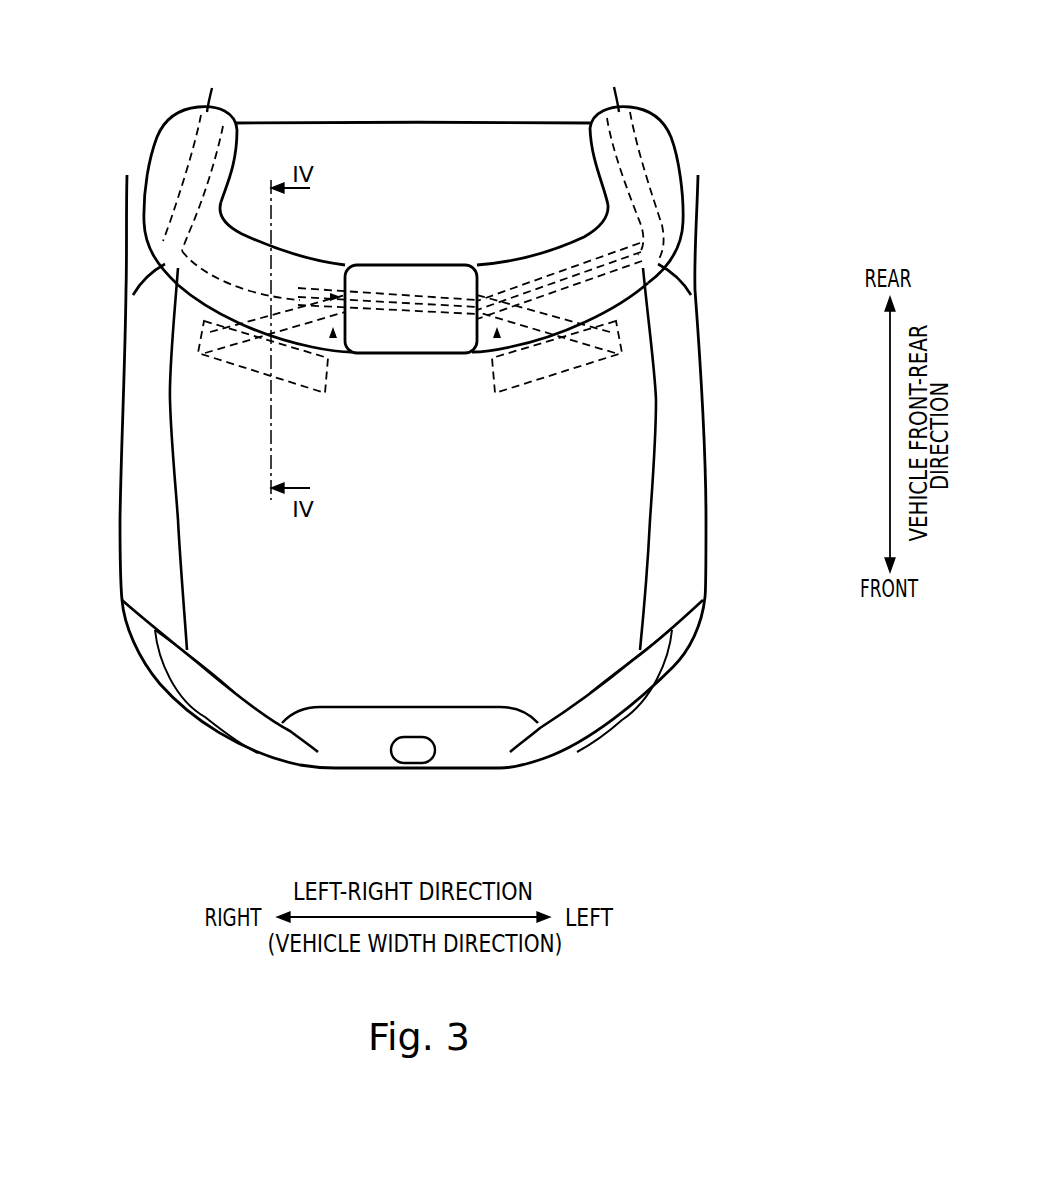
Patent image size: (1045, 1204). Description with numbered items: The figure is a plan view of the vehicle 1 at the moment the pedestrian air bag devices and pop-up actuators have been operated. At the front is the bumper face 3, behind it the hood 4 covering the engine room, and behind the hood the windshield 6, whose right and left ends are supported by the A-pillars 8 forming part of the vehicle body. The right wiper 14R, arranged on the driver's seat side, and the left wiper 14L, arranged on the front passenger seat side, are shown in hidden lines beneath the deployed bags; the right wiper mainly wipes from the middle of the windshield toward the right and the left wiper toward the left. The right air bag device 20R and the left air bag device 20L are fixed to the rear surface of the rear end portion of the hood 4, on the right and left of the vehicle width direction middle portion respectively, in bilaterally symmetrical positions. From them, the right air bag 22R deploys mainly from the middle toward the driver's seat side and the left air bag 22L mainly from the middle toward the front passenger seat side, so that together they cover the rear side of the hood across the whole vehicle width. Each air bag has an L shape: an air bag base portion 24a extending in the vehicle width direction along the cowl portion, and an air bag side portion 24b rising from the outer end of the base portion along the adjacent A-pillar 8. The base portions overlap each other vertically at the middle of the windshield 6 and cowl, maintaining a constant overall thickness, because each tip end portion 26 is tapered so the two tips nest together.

The vehicle 1 is at (657, 83).
The bumper face 3 is at (363, 747).
The hood 4 is at (628, 513).
The windshield 6 is at (452, 160).
The A-pillar 8 is at (165, 196).
The right wiper 14R is at (340, 358).
The left wiper 14L is at (510, 367).
The right air bag device 20R is at (197, 340).
The left air bag device 20L is at (623, 338).
The right air bag 22R is at (205, 278).
The left air bag 22L is at (619, 278).
The air bag base portion 24a is at (315, 265).
The air bag side portion 24b is at (178, 151).
The tip end portion 26 is at (417, 280).